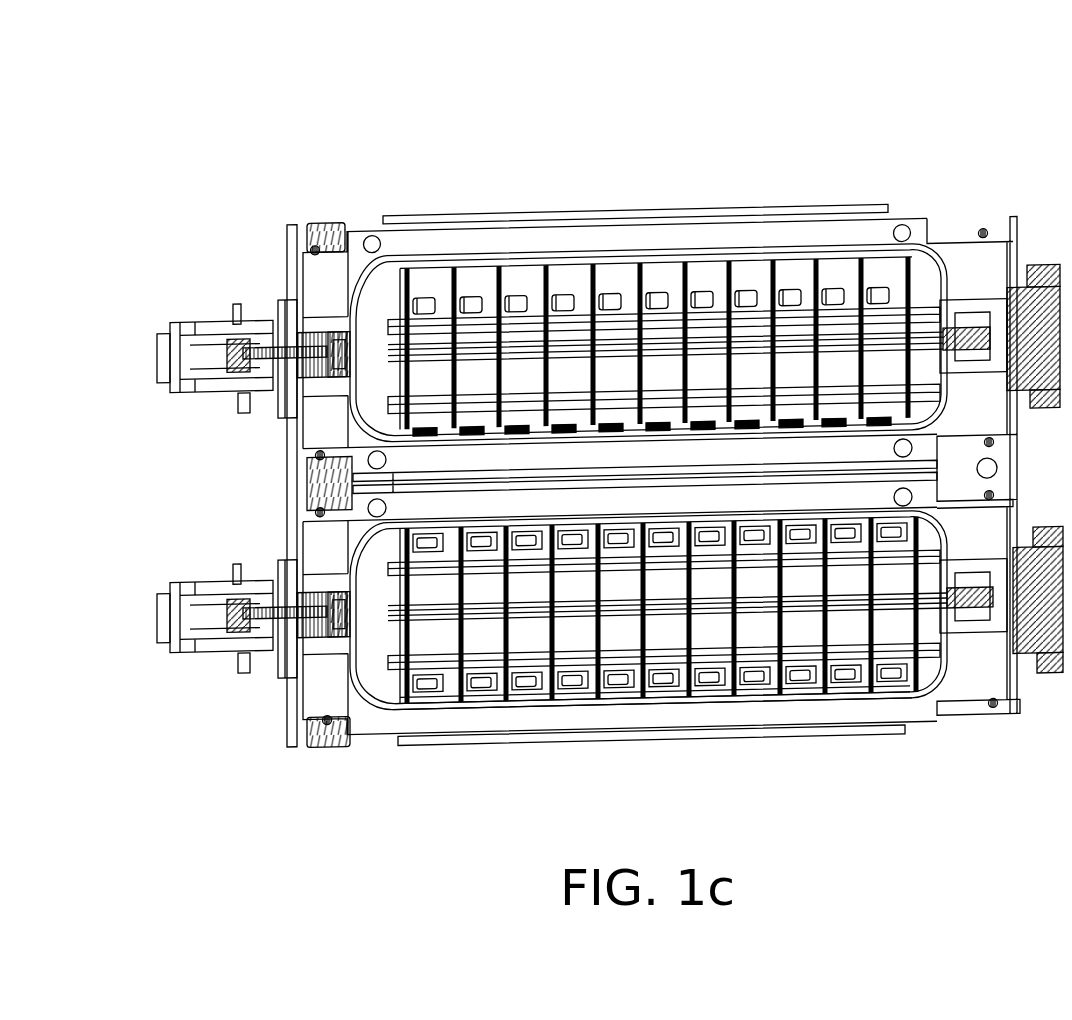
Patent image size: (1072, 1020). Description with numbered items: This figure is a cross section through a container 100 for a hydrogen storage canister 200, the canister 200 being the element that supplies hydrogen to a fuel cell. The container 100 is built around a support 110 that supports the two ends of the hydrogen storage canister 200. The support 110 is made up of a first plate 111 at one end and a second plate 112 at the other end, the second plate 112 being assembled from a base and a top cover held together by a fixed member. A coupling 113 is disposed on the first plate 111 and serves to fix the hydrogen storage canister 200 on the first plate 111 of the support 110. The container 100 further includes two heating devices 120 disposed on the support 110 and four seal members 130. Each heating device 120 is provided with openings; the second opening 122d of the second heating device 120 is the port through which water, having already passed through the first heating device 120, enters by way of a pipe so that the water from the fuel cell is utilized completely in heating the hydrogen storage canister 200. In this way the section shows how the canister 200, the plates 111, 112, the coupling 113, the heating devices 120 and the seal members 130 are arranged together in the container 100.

The container 100 is at (72, 86).
The support 110 is at (995, 133).
The first plate 111 is at (305, 240).
The second plate 112 is at (956, 225).
The coupling 113 is at (205, 653).
The heating device 120 is at (757, 710).
The second opening 122d is at (862, 700).
The seal member 130 is at (321, 235).
The hydrogen storage canister 200 is at (619, 700).